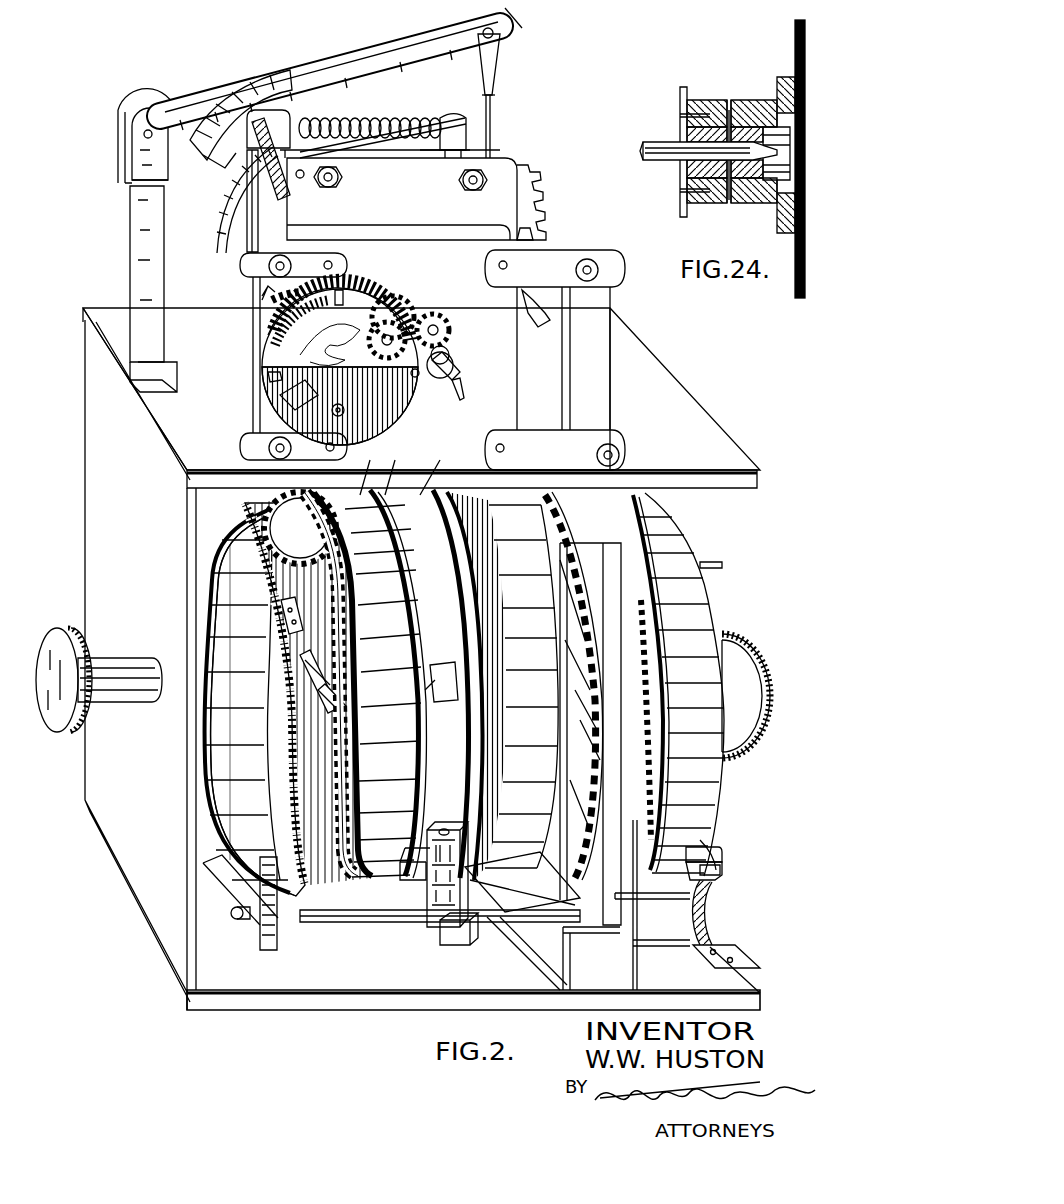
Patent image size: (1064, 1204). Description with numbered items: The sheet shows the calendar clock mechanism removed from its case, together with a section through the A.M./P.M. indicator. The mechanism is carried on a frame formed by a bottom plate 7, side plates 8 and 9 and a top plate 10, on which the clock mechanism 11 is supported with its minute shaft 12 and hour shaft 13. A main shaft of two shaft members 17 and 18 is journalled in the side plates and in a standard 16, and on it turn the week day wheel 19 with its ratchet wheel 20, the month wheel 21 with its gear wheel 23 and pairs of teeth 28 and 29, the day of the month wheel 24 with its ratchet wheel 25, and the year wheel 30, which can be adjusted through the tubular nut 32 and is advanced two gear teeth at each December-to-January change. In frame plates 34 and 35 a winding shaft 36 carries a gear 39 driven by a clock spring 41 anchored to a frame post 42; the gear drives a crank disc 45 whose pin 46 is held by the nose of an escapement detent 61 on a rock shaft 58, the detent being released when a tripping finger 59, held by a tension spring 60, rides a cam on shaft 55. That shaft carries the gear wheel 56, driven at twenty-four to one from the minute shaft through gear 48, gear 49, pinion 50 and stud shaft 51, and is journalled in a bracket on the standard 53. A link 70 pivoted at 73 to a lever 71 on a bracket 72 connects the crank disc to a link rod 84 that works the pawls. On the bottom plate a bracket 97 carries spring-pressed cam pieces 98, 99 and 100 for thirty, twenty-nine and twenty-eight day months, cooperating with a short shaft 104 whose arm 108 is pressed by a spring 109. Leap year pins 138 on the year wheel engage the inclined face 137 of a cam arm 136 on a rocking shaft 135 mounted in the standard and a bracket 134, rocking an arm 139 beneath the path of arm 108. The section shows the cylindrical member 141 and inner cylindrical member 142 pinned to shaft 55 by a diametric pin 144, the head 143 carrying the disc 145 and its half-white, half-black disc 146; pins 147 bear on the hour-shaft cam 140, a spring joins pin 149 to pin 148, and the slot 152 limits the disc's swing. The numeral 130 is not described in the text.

In FIG. 2, the bottom plate 7 is at (225, 1000).
In FIG. 2, the side plate 8 is at (142, 872).
In FIG. 2, the side plate 9 is at (660, 900).
In FIG. 2, the top plate 10 is at (187, 417).
In FIG. 2, the clock mechanism 11 is at (500, 385).
In FIG. 2, the minute shaft 12 is at (462, 398).
In FIG. 2, the hour shaft 13 is at (455, 362).
In FIG. 2, the standard 16 is at (270, 930).
In FIG. 2, the shaft member 17 is at (60, 640).
In FIG. 2, the shaft member 18 is at (770, 692).
In FIG. 2, the week day wheel 19 is at (208, 733).
In FIG. 2, the ratchet wheel 20 is at (210, 608).
In FIG. 2, the month wheel 21 is at (332, 566).
In FIG. 2, the gear wheel 23 is at (290, 527).
In FIG. 2, the day of the month wheel 24 is at (462, 775).
In FIG. 2, the ratchet wheel 25 is at (560, 560).
In FIG. 2, the tooth 28 is at (399, 464).
In FIG. 2, the tooth 29 is at (401, 466).
In FIG. 2, the year wheel 30 is at (712, 616).
In FIG. 2, the tubular nut 32 is at (730, 748).
In FIG. 2, the frame plate 34 is at (500, 178).
In FIG. 2, the frame plate 35 is at (462, 130).
In FIG. 2, the shaft 36 is at (525, 285).
In FIG. 2, the gear 39 is at (540, 200).
In FIG. 2, the clock spring 41 is at (445, 125).
In FIG. 2, the frame post 42 is at (465, 158).
In FIG. 2, the crank disc 45 is at (238, 268).
In FIG. 2, the pin 46 is at (322, 100).
In FIG. 2, the gear 48 is at (410, 308).
In FIG. 2, the gear 49 is at (389, 320).
In FIG. 2, the pinion 50 is at (440, 320).
In FIG. 2, the stud shaft 51 is at (340, 363).
In FIG. 2, the standard 53 is at (268, 376).
In FIG. 24, the shaft 55 is at (650, 163).
In FIG. 2, the gear wheel 56 is at (262, 308).
In FIG. 24, the gear wheel 56 is at (680, 95).
In FIG. 2, the rock shaft 58 is at (250, 95).
In FIG. 2, the tripping finger 59 is at (262, 193).
In FIG. 2, the tension spring 60 is at (392, 118).
In FIG. 2, the escapement detent 61 is at (232, 105).
In FIG. 2, the link 70 is at (400, 70).
In FIG. 2, the lever 71 is at (522, 29).
In FIG. 2, the bracket 72 is at (130, 222).
In FIG. 2, the pivot connection 73 is at (412, 70).
In FIG. 2, the link rod 84 is at (492, 110).
In FIG. 2, the bracket 97 is at (455, 940).
In FIG. 2, the cam piece 98 is at (432, 880).
In FIG. 2, the cam piece 99 is at (500, 938).
In FIG. 2, the cam piece 100 is at (428, 905).
In FIG. 2, the short shaft 104 is at (340, 668).
In FIG. 2, the arm 108 is at (348, 698).
In FIG. 2, the spring 109 is at (295, 630).
In FIG. 2, the stop 130 is at (700, 870).
In FIG. 2, the bracket 134 is at (725, 940).
In FIG. 2, the rocking shaft 135 is at (345, 922).
In FIG. 2, the cam arm 136 is at (706, 866).
In FIG. 2, the inclined face 137 is at (700, 848).
In FIG. 2, the pin 138 is at (722, 565).
In FIG. 2, the arm 139 is at (282, 890).
In FIG. 2, the cam 140 is at (448, 352).
In FIG. 24, the cylindrical member 141 is at (710, 105).
In FIG. 24, the inner cylindrical member 142 is at (740, 108).
In FIG. 24, the circular head 143 is at (745, 200).
In FIG. 24, the diametric pin 144 is at (718, 200).
In FIG. 2, the disc 145 is at (278, 345).
In FIG. 24, the disc 145 is at (780, 80).
In FIG. 24, the disc 146 is at (795, 292).
In FIG. 2, the pin 147 is at (418, 395).
In FIG. 2, the pin 148 is at (343, 295).
In FIG. 2, the pin 149 is at (300, 357).
In FIG. 2, the slot 152 is at (285, 400).